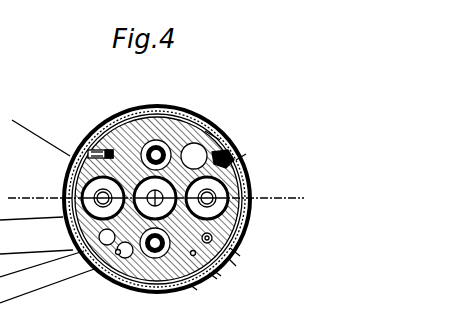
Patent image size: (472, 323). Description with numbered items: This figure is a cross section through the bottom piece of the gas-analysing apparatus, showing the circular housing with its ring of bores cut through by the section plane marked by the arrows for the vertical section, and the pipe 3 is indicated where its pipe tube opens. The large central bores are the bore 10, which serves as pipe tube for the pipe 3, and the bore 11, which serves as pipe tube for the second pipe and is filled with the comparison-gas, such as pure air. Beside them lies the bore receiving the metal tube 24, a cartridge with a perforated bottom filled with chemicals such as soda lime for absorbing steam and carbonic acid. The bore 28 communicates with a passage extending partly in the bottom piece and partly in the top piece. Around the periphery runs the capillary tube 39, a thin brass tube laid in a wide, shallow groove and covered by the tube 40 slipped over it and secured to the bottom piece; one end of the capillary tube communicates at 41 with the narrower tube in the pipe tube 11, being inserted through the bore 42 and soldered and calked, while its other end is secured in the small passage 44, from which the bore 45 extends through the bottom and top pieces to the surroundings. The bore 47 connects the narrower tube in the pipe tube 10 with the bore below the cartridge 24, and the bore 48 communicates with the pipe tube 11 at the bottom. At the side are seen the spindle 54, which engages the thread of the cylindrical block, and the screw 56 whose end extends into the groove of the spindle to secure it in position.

The pipe 3 is at (43, 179).
The bore 10 is at (158, 141).
The bore 11 is at (102, 277).
The metal tube 24 is at (243, 157).
The bore 28 is at (213, 131).
The capillary tube 39 is at (236, 252).
The tube 40 is at (195, 150).
The bore 41 is at (193, 287).
The bore 42 is at (213, 276).
The small passage 44 is at (217, 273).
The bore 45 is at (232, 262).
The bore 47 is at (230, 150).
The bore 48 is at (254, 226).
The spindle 54 is at (117, 122).
The screw 56 is at (90, 130).